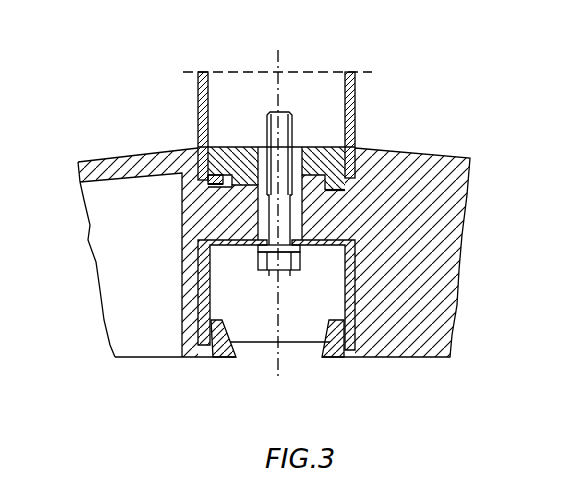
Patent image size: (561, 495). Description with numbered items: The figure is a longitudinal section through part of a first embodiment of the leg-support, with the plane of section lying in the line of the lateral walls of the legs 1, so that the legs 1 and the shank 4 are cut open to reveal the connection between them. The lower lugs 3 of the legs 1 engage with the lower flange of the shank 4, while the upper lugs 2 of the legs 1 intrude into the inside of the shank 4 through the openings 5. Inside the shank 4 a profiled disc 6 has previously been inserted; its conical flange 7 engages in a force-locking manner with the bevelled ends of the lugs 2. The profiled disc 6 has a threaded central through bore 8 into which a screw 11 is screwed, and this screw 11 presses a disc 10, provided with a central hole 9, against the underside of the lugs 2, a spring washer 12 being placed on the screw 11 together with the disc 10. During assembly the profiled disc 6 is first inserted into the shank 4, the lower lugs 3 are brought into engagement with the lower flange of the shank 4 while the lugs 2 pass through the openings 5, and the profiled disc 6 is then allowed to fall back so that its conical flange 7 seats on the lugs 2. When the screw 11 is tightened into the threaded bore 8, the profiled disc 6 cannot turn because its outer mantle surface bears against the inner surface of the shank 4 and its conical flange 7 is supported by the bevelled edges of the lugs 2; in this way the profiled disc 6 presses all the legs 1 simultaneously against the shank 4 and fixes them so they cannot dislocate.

The leg 1 is at (108, 160).
The lug 2 is at (225, 212).
The lug 3 is at (216, 358).
The shank 4 is at (357, 85).
The opening 5 is at (350, 198).
The profiled disc 6 is at (235, 155).
The conical flange 7 is at (222, 178).
The threaded central through bore 8 is at (262, 160).
The central hole 9 is at (200, 282).
The disc 10 is at (306, 262).
The screw 11 is at (268, 265).
The spring washer 12 is at (260, 254).